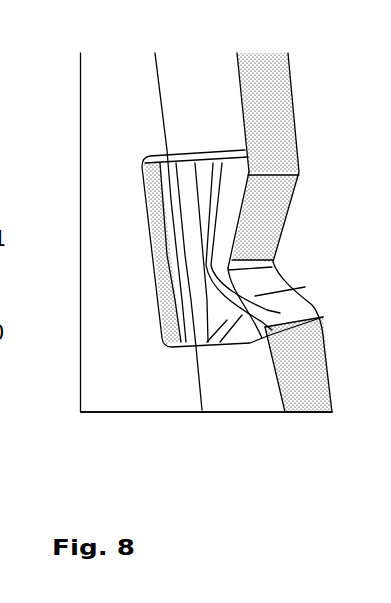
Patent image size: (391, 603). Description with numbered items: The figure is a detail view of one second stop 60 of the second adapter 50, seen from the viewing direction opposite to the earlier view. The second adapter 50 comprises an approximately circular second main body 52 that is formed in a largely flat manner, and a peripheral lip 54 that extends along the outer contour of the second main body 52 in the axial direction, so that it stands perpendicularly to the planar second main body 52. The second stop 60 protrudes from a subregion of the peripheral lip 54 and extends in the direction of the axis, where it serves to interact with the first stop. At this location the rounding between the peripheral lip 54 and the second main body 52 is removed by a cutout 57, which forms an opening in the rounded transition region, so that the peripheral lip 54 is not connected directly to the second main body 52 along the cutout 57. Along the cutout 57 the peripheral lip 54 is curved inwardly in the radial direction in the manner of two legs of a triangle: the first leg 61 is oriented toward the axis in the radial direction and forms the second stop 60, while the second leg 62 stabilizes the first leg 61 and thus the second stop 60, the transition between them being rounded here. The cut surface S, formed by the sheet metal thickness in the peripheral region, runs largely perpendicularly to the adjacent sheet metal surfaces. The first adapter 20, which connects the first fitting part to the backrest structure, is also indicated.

The second adapter 50 is at (152, 93).
The second main body 52 is at (107, 377).
The peripheral lip 54 is at (266, 104).
The first adapter 20 is at (182, 197).
The second leg 62 is at (268, 228).
The second stop 60 is at (238, 300).
The first leg 61 is at (272, 288).
The cutout 57 is at (262, 330).
The cutting face S is at (160, 232).